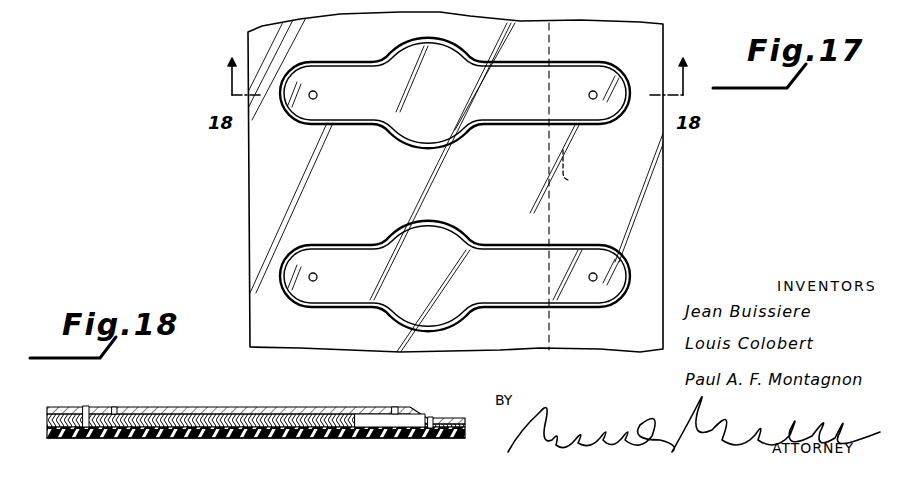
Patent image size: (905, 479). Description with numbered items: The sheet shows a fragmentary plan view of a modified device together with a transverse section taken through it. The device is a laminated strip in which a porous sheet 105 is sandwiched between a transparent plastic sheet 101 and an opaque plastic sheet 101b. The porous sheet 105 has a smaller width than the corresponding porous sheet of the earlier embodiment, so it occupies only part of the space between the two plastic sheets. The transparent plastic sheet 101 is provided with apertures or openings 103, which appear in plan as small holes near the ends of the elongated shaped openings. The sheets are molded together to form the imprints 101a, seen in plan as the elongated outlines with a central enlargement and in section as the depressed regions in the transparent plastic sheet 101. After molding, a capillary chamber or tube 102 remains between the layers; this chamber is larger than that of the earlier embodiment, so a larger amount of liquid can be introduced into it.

In FIG. 17, the transparent plastic sheet 101 is at (433, 182).
In FIG. 18, the transparent plastic sheet 101 is at (222, 407).
In FIG. 17, the imprints 101a is at (352, 125).
In FIG. 18, the imprints 101a is at (86, 406).
In FIG. 18, the opaque plastic sheet 101b is at (252, 439).
In FIG. 18, the capillary chamber 102 is at (362, 437).
In FIG. 17, the apertures 103 is at (317, 95).
In FIG. 18, the apertures 103 is at (118, 406).
In FIG. 17, the porous sheet 105 is at (568, 181).
In FIG. 18, the porous sheet 105 is at (47, 422).